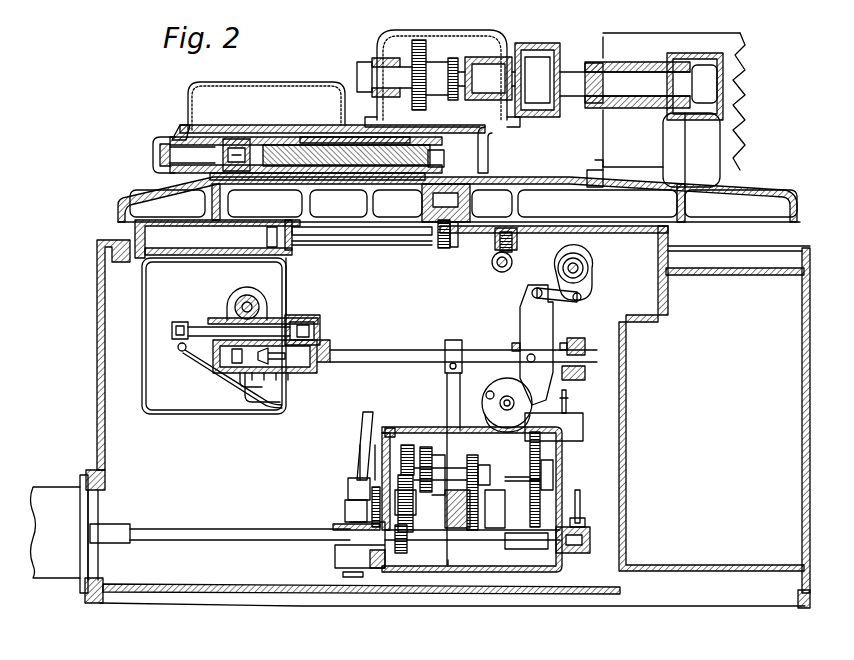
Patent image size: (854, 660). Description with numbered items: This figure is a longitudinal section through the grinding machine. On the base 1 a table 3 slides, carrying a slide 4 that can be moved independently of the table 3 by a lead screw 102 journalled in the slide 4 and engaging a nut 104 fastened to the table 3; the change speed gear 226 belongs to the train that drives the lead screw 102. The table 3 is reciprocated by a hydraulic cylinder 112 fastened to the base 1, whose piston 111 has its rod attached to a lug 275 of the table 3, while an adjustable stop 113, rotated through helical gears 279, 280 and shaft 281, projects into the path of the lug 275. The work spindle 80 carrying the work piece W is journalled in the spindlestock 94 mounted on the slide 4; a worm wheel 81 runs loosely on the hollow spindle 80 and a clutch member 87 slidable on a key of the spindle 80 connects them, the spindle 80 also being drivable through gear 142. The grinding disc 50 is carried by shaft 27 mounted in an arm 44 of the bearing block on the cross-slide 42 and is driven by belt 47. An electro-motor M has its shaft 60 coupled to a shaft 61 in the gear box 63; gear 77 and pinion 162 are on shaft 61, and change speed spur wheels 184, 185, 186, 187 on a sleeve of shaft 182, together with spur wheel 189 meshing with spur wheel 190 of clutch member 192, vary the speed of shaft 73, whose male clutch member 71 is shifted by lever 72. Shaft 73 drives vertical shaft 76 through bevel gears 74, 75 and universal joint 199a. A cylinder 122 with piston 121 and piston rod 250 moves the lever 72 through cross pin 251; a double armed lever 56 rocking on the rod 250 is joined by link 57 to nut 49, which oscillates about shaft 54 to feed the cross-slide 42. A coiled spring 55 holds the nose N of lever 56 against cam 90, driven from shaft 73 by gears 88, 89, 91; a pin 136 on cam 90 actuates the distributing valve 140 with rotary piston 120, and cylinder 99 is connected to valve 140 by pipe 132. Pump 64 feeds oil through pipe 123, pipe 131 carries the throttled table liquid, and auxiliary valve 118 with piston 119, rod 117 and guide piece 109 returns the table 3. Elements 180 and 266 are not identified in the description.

The base 1 is at (97, 413).
The table 3 is at (127, 198).
The slide 4 is at (178, 130).
The grinding disc shaft 27 is at (594, 85).
The cross-slide 42 is at (606, 179).
The arm 44 is at (665, 125).
The belt 47 is at (705, 90).
The nut 49 is at (594, 266).
The grinding disc 50 is at (576, 100).
The shaft 54 is at (556, 262).
The coiled spring 55 is at (512, 345).
The double armed lever 56 is at (520, 315).
The link 57 is at (577, 302).
The motor shaft 60 is at (228, 530).
The shaft 61 is at (462, 541).
The gear box 63 is at (495, 568).
The pump 64 is at (575, 553).
The male clutch member 71 is at (452, 566).
The lever 72 is at (447, 395).
The shaft 73 is at (514, 541).
The bevel gear 74 is at (350, 486).
The bevel gear 75 is at (340, 526).
The vertical shaft 76 is at (364, 428).
The gear 77 is at (403, 556).
The work spindle 80 is at (386, 78).
The worm wheel 81 is at (420, 40).
The clutch member 87 is at (455, 58).
The gear 88 is at (532, 500).
The gear 89 is at (553, 463).
The cam 90 is at (502, 390).
The spur wheel 91 is at (541, 440).
The spindlestock 94 is at (510, 122).
The cylinder 99 is at (583, 430).
The lead screw 102 is at (160, 155).
The nut 104 is at (303, 138).
The guide piece 109 is at (172, 332).
The piston 111 is at (318, 243).
The hydraulic cylinder 112 is at (183, 251).
The adjustable stop 113 is at (455, 250).
The rod 117 is at (194, 327).
The auxiliary valve 118 is at (291, 318).
The piston 119 is at (311, 331).
The valve piston 120 is at (247, 295).
The piston 121 is at (285, 365).
The cylinder 122 is at (243, 374).
The pipe 123 is at (581, 508).
The pipe 131 is at (190, 358).
The pipe 132 is at (570, 405).
The pin 136 is at (487, 394).
The distributing valve 140 is at (230, 300).
The gear 142 is at (482, 62).
The pinion 162 is at (407, 545).
The gear 180 is at (413, 505).
The shaft 182 is at (541, 480).
The spur wheel 184 is at (360, 462).
The spur wheel 185 is at (388, 428).
The spur wheel 186 is at (408, 445).
The spur wheel 187 is at (428, 447).
The spur wheel 189 is at (474, 456).
The spur wheel 190 is at (486, 478).
The clutch member 192 is at (475, 509).
The universal joint 199a is at (346, 505).
The change speed gear 226 is at (234, 138).
The piston rod 250 is at (388, 350).
The cross pin 251 is at (452, 345).
The bearing block 266 is at (589, 380).
The lug 275 is at (444, 250).
The helical gear 279 is at (512, 228).
The helical gear 280 is at (503, 264).
The shaft 281 is at (497, 266).
The electro-motor M is at (56, 497).
The work piece W is at (541, 57).